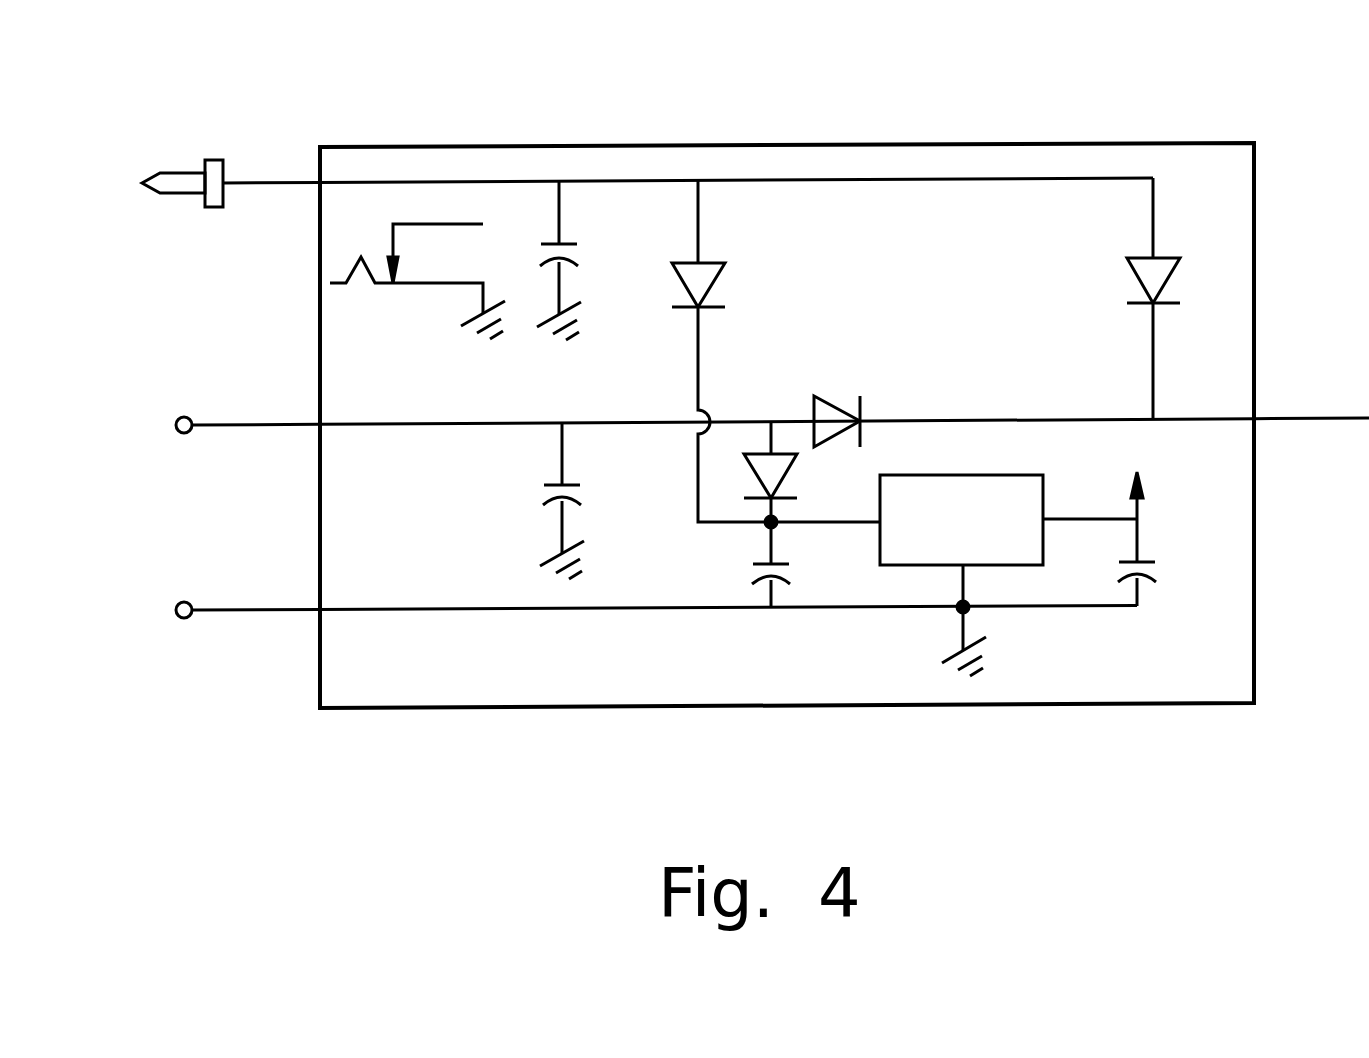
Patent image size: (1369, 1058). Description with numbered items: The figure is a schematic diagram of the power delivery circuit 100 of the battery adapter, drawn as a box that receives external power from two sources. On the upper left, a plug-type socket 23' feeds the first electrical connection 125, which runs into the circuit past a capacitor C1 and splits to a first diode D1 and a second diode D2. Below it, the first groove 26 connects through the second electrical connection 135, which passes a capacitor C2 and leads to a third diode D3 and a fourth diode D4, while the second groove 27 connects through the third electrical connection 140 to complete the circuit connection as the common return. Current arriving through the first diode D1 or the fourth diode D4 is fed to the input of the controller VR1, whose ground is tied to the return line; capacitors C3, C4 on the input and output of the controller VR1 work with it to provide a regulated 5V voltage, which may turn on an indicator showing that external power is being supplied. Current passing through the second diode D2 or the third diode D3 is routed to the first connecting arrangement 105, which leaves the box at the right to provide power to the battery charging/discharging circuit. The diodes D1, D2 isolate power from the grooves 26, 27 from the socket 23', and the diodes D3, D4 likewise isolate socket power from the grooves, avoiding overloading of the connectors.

The power delivery circuit 100 is at (997, 143).
The plug connector 23' is at (182, 218).
The first electrical connection 125 is at (267, 184).
The first groove 26 is at (177, 420).
The second electrical connection 135 is at (253, 426).
The second groove 27 is at (177, 605).
The third electrical connection 140 is at (253, 611).
The first connecting arrangement 105 is at (1331, 419).
The capacitor C1 is at (579, 260).
The capacitor C2 is at (581, 501).
The capacitor C3 is at (792, 565).
The capacitor C4 is at (1158, 562).
The first diode D1 is at (776, 351).
The second diode D2 is at (1176, 298).
The third diode D3 is at (837, 405).
The fourth diode D4 is at (793, 474).
The controller VR1 is at (1008, 575).
The regulated 5V voltage 5V is at (1136, 479).